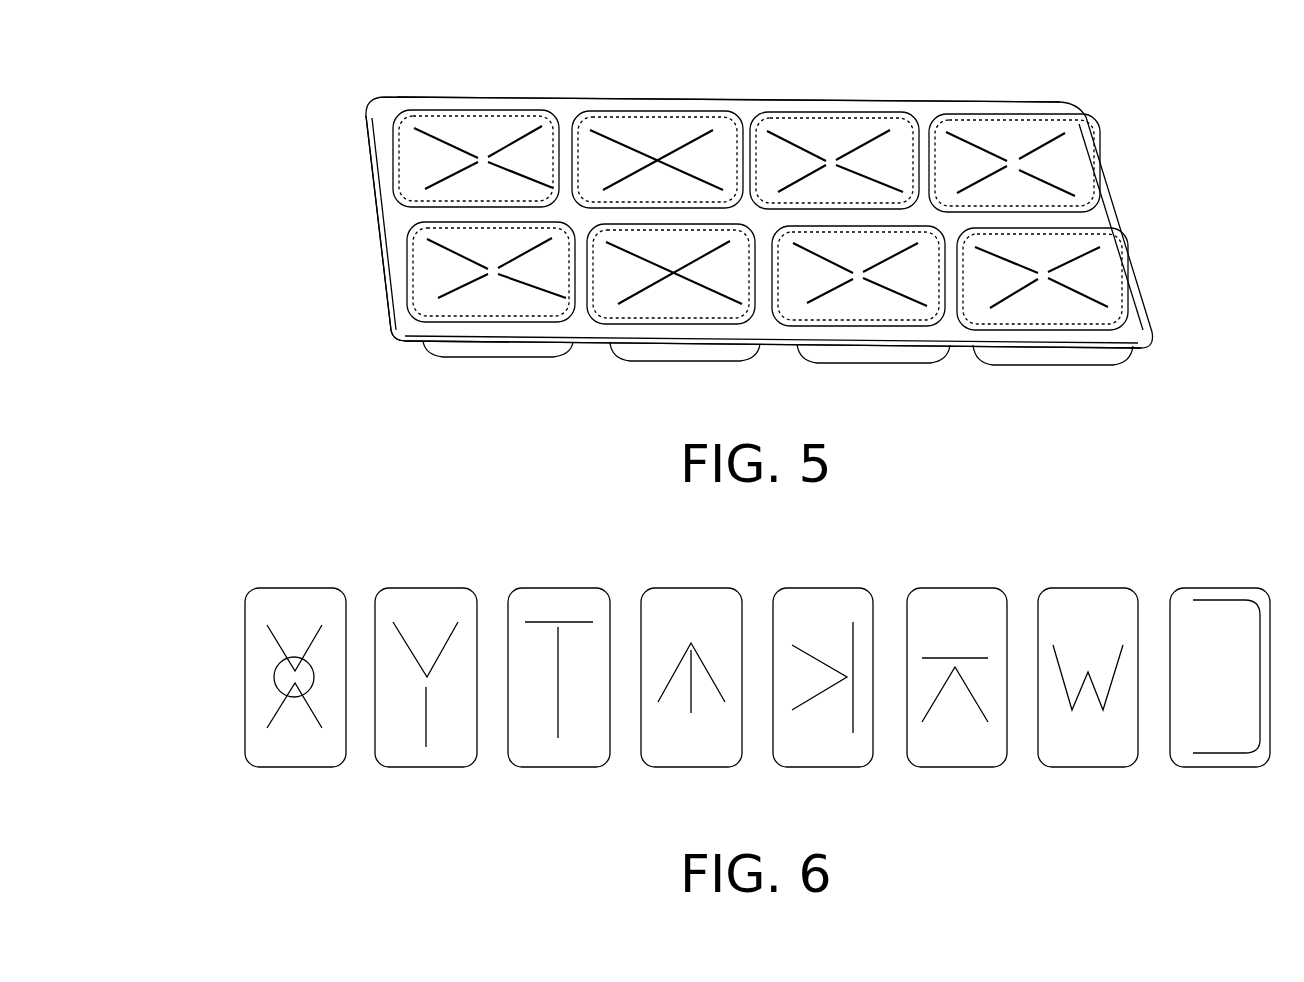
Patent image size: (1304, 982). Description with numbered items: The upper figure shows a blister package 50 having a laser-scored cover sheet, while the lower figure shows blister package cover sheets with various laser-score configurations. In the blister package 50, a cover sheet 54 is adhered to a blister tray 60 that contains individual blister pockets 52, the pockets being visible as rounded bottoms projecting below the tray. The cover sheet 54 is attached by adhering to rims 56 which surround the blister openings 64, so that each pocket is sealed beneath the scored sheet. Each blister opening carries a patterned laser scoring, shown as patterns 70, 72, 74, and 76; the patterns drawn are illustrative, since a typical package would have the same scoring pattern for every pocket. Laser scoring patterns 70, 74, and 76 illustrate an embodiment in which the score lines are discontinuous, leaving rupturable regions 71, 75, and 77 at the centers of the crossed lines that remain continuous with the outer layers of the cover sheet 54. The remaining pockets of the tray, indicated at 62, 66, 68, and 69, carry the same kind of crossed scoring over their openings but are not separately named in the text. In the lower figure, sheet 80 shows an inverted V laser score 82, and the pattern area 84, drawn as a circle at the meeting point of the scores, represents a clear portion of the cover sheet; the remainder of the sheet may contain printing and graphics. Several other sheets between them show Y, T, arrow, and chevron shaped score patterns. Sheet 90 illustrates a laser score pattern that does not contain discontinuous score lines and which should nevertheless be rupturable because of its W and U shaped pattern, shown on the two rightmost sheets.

In FIG. 5, the blister package 50 is at (332, 233).
In FIG. 5, the blister pockets 52 is at (673, 360).
In FIG. 5, the cover sheet 54 is at (957, 298).
In FIG. 5, the rims 56 is at (422, 322).
In FIG. 5, the blister tray 60 is at (1052, 113).
In FIG. 5, the cavity 62 is at (834, 160).
In FIG. 5, the blister openings 64 is at (477, 135).
In FIG. 5, the cavity 66 is at (491, 272).
In FIG. 5, the cavity 68 is at (671, 274).
In FIG. 5, the cavity 69 is at (1042, 279).
In FIG. 5, the laser scoring pattern 70 is at (457, 288).
In FIG. 5, the rupturable region 71 is at (495, 268).
In FIG. 5, the laser scoring pattern 72 is at (687, 143).
In FIG. 5, the laser scoring pattern 74 is at (820, 302).
In FIG. 5, the rupturable region 75 is at (858, 280).
In FIG. 5, the laser scoring pattern 76 is at (963, 143).
In FIG. 5, the rupturable region 77 is at (1020, 167).
In FIG. 6, the sheet 80 is at (288, 621).
In FIG. 6, the inverted V laser score 82 is at (268, 643).
In FIG. 6, the pattern area 84 is at (297, 678).
In FIG. 6, the sheet 90 is at (1185, 655).